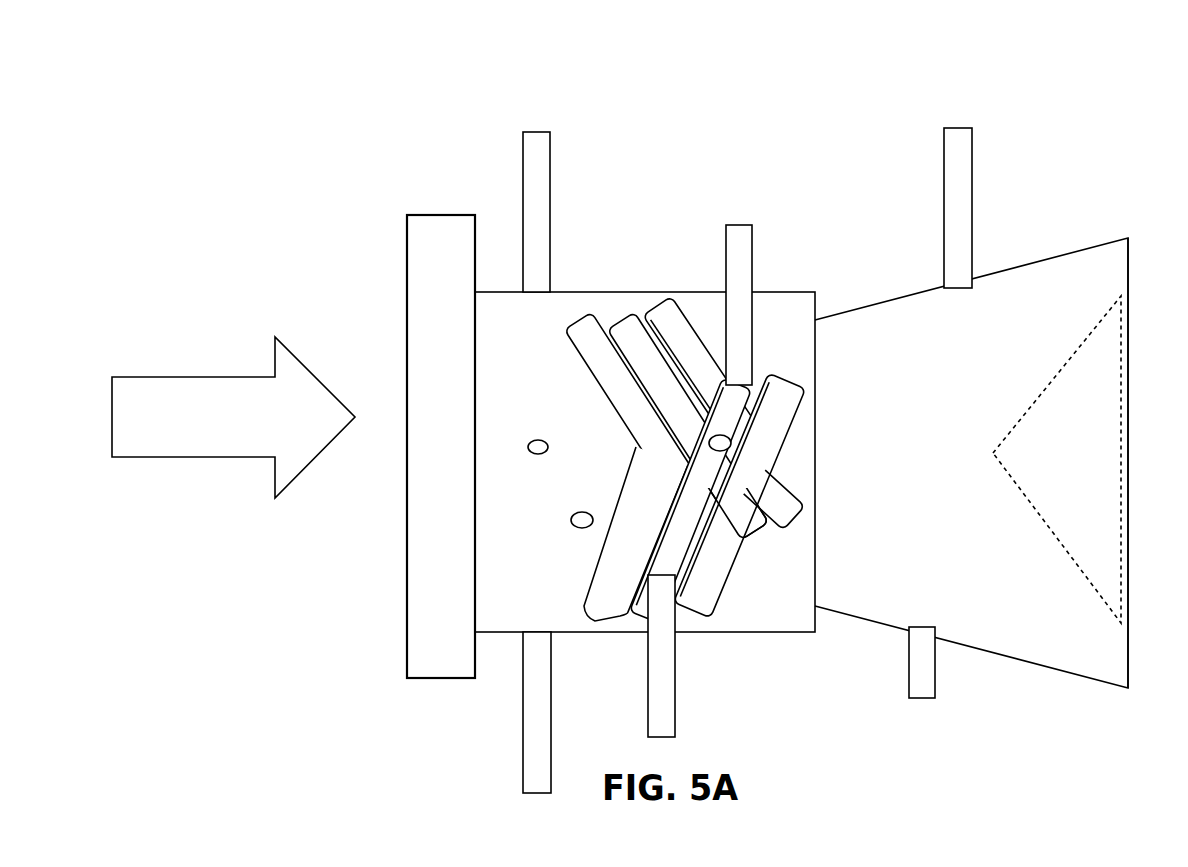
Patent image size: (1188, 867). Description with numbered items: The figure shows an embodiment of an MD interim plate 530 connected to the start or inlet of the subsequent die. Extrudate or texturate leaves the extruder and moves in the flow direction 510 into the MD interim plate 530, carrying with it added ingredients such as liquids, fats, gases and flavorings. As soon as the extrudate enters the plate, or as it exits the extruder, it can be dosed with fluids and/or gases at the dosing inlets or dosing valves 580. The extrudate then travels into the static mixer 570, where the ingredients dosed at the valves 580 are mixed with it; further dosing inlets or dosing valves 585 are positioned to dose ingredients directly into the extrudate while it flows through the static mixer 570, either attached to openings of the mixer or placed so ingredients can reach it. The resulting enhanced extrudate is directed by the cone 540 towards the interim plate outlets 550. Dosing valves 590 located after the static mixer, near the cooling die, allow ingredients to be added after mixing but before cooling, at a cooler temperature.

The flow field/flow direction 510 is at (214, 449).
The MD interim plate 530 is at (875, 407).
The cone 540 is at (1057, 462).
The interim plate outlets 550 is at (1122, 273).
The static mixer 570 is at (750, 567).
The dosing inlets or dosing valves 580 is at (322, 605).
The dosing inlets or dosing valves 585 is at (660, 573).
The dosing valves 590 is at (958, 127).